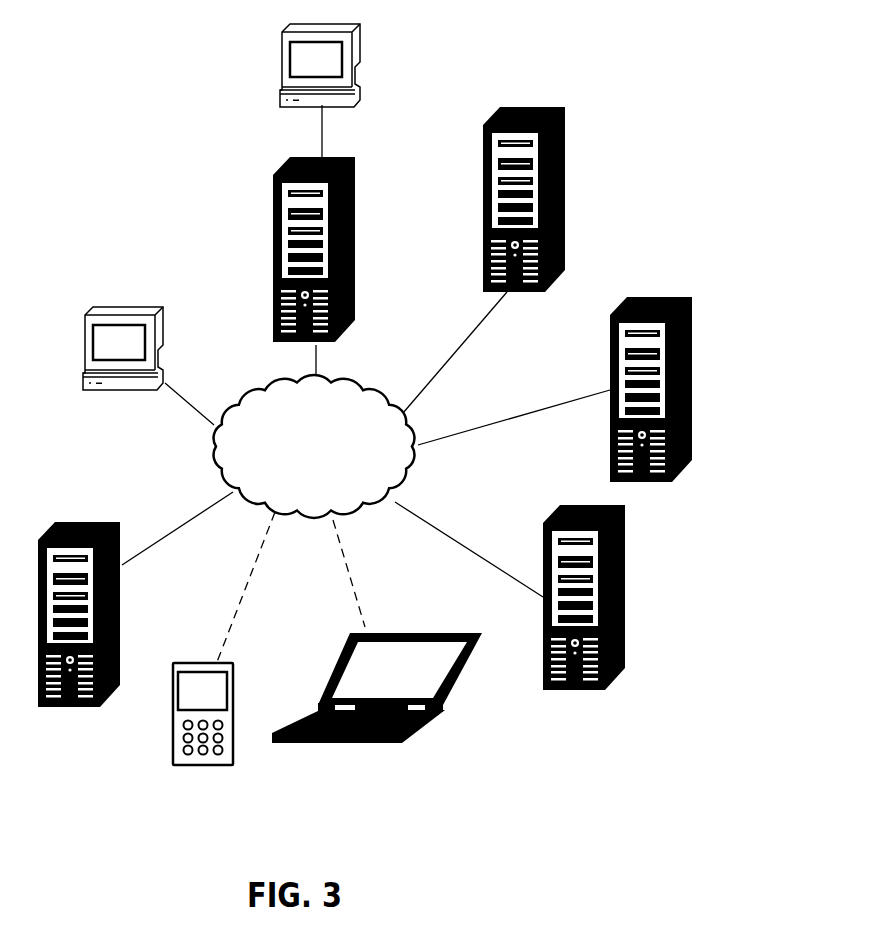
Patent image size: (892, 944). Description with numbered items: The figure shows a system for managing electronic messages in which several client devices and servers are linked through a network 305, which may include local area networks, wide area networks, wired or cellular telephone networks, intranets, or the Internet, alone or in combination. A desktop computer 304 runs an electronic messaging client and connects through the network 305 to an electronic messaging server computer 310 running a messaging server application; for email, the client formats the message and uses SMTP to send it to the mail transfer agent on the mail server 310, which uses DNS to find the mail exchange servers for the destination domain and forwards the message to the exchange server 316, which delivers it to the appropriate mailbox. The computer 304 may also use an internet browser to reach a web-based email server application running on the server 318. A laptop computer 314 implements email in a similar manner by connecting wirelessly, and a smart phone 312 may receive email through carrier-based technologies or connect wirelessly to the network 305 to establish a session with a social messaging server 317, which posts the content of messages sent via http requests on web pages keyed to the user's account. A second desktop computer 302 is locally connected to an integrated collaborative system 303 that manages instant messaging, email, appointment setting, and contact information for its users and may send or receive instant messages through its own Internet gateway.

The second desktop computer 302 is at (283, 139).
The integrated collaborative system 303 is at (399, 221).
The computer 304 is at (86, 421).
The network 305 is at (330, 472).
The electronic messaging server computer 310 is at (75, 771).
The smart phone 312 is at (200, 797).
The laptop computer 314 is at (383, 784).
The exchange server 316 is at (458, 312).
The social messaging server 317 is at (740, 529).
The server 318 is at (688, 704).